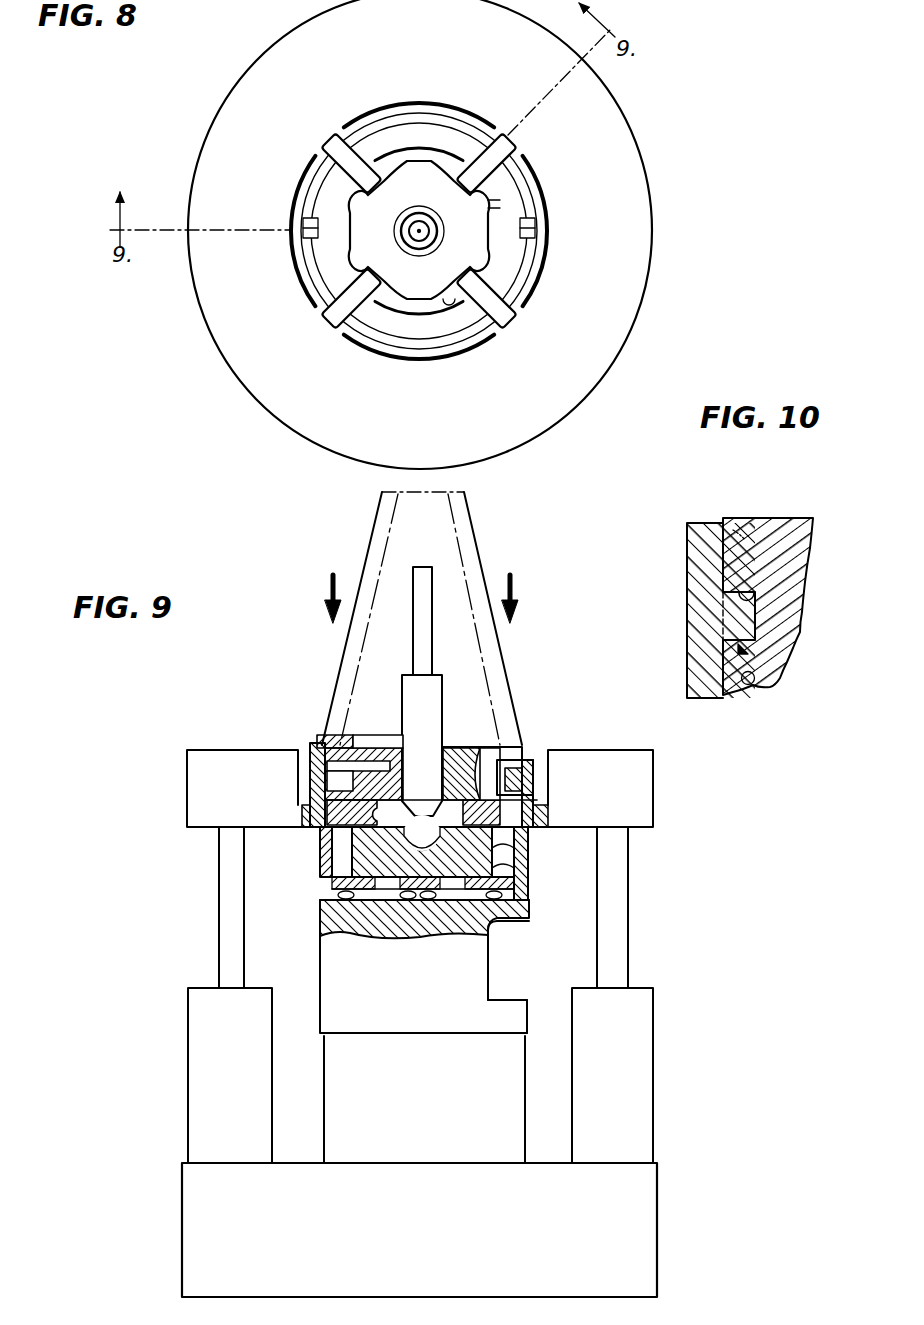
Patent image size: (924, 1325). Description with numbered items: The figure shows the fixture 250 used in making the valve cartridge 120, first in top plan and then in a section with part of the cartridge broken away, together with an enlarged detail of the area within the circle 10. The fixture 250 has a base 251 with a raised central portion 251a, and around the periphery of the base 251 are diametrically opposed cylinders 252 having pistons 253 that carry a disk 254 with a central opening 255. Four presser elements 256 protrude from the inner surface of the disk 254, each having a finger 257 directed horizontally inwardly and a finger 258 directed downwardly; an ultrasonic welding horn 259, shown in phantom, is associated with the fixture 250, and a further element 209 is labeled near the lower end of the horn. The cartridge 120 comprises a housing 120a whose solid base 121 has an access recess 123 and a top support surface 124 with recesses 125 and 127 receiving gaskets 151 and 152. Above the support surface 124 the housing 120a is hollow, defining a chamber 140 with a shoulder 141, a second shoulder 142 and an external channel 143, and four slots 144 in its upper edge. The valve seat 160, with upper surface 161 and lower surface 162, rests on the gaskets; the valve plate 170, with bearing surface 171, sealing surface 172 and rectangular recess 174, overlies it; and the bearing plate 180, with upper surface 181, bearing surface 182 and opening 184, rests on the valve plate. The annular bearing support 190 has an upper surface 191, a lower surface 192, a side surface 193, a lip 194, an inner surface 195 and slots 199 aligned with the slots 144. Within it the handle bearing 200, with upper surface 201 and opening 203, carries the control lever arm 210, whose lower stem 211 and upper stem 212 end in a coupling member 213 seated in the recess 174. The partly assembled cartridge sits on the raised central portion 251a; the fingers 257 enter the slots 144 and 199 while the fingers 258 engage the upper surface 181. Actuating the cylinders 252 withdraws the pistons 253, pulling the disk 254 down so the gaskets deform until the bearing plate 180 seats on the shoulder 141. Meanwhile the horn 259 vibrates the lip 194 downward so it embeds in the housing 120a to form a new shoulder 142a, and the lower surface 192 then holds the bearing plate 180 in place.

In FIG. 9, the circle 10 is at (305, 740).
In FIG. 9, the valve cartridge 120 is at (318, 1038).
In FIG. 9, the housing 120a is at (400, 1037).
In FIG. 10, the housing 120a is at (684, 536).
In FIG. 9, the base 121 is at (445, 1020).
In FIG. 9, the recess 123 is at (503, 1000).
In FIG. 9, the support surface 124 is at (322, 905).
In FIG. 9, the recess 125 is at (390, 898).
In FIG. 9, the recess 127 is at (465, 898).
In FIG. 9, the chamber 140 is at (340, 852).
In FIG. 9, the shoulder 141 is at (325, 840).
In FIG. 10, the second shoulder 142 is at (755, 612).
In FIG. 10, the new shoulder 142a is at (750, 655).
In FIG. 9, the channel 143 is at (303, 802).
In FIG. 9, the slots 144 is at (547, 766).
In FIG. 9, the gasket 151 is at (348, 898).
In FIG. 9, the gasket 152 is at (505, 922).
In FIG. 9, the valve seat 160 is at (325, 889).
In FIG. 9, the upper surface 161 is at (330, 878).
In FIG. 9, the lower surface 162 is at (528, 918).
In FIG. 9, the valve plate 170 is at (500, 858).
In FIG. 9, the bearing surface 171 is at (522, 840).
In FIG. 9, the sealing surface 172 is at (495, 868).
In FIG. 9, the recess 174 is at (466, 838).
In FIG. 9, the bearing plate 180 is at (532, 798).
In FIG. 8, the upper surface 181 is at (500, 203).
In FIG. 9, the upper surface 181 is at (528, 798).
In FIG. 9, the bearing surface 182 is at (540, 814).
In FIG. 9, the opening 184 is at (310, 815).
In FIG. 8, the bearing support 190 is at (452, 150).
In FIG. 9, the bearing support 190 is at (338, 732).
In FIG. 10, the bearing support 190 is at (800, 514).
In FIG. 8, the upper surface 191 is at (507, 231).
In FIG. 10, the upper surface 191 is at (777, 520).
In FIG. 9, the lower surface 192 is at (308, 792).
In FIG. 10, the side surface 193 is at (754, 683).
In FIG. 10, the lip 194 is at (738, 543).
In FIG. 8, the inner cylindrical surface 195 is at (449, 303).
In FIG. 9, the slots 199 is at (520, 760).
In FIG. 8, the handle bearing 200 is at (420, 158).
In FIG. 9, the handle bearing 200 is at (378, 730).
In FIG. 8, the upper surface 201 is at (428, 277).
In FIG. 9, the opening 203 is at (446, 730).
In FIG. 9, the holder lower end 209 is at (330, 745).
In FIG. 9, the control lever arm 210 is at (410, 604).
In FIG. 8, the lower stem 211 is at (417, 247).
In FIG. 9, the lower stem 211 is at (432, 690).
In FIG. 9, the upper stem 212 is at (416, 568).
In FIG. 9, the coupling member 213 is at (404, 842).
In FIG. 8, the fixture 250 is at (653, 181).
In FIG. 9, the fixture 250 is at (658, 1211).
In FIG. 9, the base 251 is at (627, 1283).
In FIG. 9, the raised central portion 251a is at (520, 1108).
In FIG. 9, the cylinders 252 is at (200, 1112).
In FIG. 9, the pistons 253 is at (230, 925).
In FIG. 8, the disk 254 is at (640, 228).
In FIG. 9, the disk 254 is at (655, 773).
In FIG. 8, the central opening 255 is at (533, 180).
In FIG. 9, the central opening 255 is at (300, 755).
In FIG. 8, the presser elements 256 is at (372, 150).
In FIG. 9, the presser elements 256 is at (567, 745).
In FIG. 8, the finger 257 is at (497, 160).
In FIG. 9, the finger 257 is at (505, 760).
In FIG. 9, the finger 258 is at (500, 760).
In FIG. 9, the ultrasonic welding horn 259 is at (483, 557).